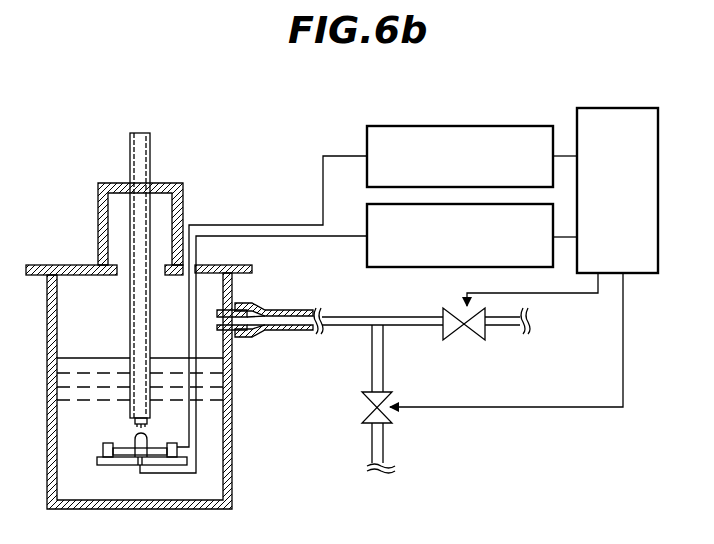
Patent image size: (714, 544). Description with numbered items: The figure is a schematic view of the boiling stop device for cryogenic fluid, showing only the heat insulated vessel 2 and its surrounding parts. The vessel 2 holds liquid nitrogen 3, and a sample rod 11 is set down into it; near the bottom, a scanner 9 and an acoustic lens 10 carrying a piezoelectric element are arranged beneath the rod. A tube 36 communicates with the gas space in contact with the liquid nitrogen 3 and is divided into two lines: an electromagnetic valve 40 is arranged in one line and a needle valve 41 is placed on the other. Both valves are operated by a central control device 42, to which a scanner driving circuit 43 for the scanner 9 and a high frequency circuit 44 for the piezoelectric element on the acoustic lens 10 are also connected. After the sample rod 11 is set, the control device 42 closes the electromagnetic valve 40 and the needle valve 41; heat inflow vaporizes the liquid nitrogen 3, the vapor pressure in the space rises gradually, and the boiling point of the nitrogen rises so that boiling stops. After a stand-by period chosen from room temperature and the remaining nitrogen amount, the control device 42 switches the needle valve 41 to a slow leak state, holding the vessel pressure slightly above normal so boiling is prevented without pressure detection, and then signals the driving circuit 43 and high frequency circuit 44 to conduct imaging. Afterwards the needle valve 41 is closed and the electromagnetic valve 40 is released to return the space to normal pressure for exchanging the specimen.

The heat insulated vessel 2 is at (160, 507).
The liquid nitrogen 3 is at (213, 433).
The scanner 9 is at (108, 452).
The acoustic lens 10 is at (133, 437).
The sample rod 11 is at (152, 150).
The tube 36 is at (285, 334).
The electromagnetic valve 40 is at (462, 330).
The needle valve 41 is at (370, 412).
The central control device 42 is at (600, 108).
The scanner driving circuit 43 is at (480, 128).
The high frequency circuit 44 is at (372, 215).